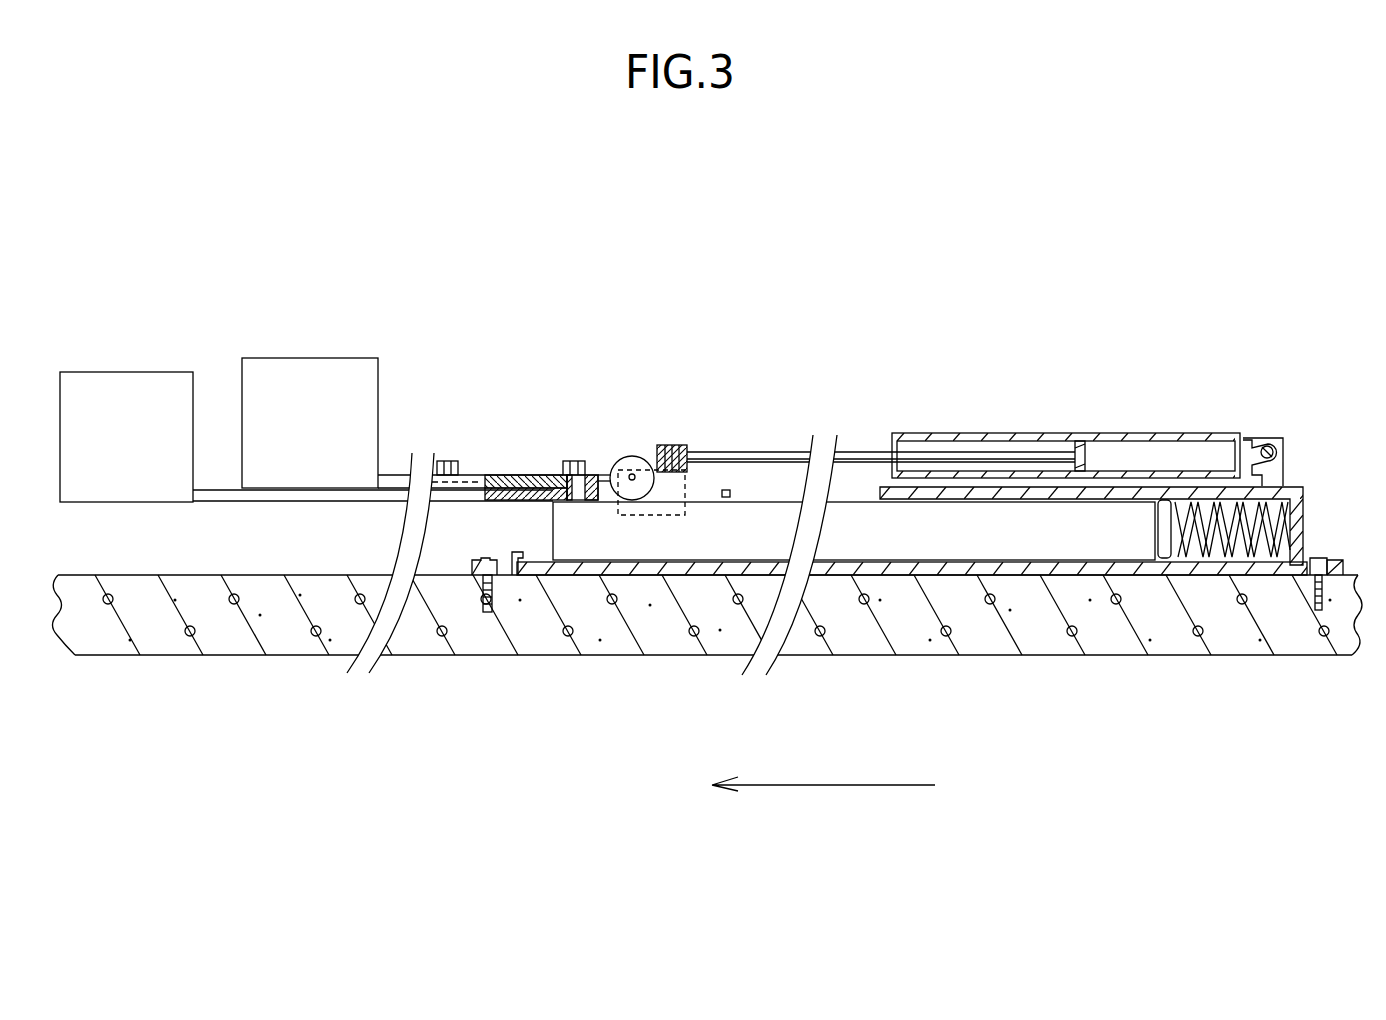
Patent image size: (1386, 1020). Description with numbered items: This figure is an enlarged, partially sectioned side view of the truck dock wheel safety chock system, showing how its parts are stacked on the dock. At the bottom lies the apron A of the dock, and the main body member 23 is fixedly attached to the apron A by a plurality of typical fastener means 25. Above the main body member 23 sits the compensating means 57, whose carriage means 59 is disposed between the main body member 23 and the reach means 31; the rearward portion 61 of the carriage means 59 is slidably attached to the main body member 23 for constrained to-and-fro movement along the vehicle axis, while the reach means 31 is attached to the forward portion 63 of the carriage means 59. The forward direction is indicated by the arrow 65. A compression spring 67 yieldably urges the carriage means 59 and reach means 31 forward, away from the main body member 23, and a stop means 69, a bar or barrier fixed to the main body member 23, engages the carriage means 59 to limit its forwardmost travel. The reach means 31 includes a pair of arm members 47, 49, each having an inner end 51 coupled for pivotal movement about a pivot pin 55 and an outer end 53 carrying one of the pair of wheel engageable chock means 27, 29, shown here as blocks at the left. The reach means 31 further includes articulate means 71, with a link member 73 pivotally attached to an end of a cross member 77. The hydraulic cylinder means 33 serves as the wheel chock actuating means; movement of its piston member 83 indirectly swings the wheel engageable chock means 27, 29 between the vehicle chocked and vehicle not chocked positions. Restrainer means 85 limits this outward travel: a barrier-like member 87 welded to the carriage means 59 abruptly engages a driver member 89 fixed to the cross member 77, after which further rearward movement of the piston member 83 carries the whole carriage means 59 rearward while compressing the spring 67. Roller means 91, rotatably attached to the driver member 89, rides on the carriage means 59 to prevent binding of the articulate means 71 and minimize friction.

The main body member 23 is at (1303, 505).
The fastener means 25 is at (483, 559).
The wheel engageable chock means 27 is at (123, 454).
The wheel engageable chock means 29 is at (307, 423).
The reach means 31 is at (545, 302).
The hydraulic cylinder means 33 is at (1152, 392).
The arm member 47 is at (342, 502).
The arm member 49 is at (392, 477).
The inner end 51 is at (530, 499).
The outer end 53 is at (221, 494).
The pivot pin 55 is at (571, 501).
The compensating means 57 is at (1302, 367).
The carriage means 59 is at (874, 544).
The rearward portion 61 is at (1142, 545).
The forward portion 63 is at (604, 548).
The arrow 65 is at (787, 788).
The compression spring 67 is at (1217, 545).
The stop means 69 is at (532, 549).
The articulate means 71 is at (604, 349).
The link member 73 is at (607, 470).
The cross member 77 is at (672, 445).
The piston member 83 is at (1086, 450).
The restrainer means 85 is at (775, 418).
The barrier-like member 87 is at (732, 492).
The driver member 89 is at (677, 492).
The roller means 91 is at (637, 466).
The apron A is at (238, 640).